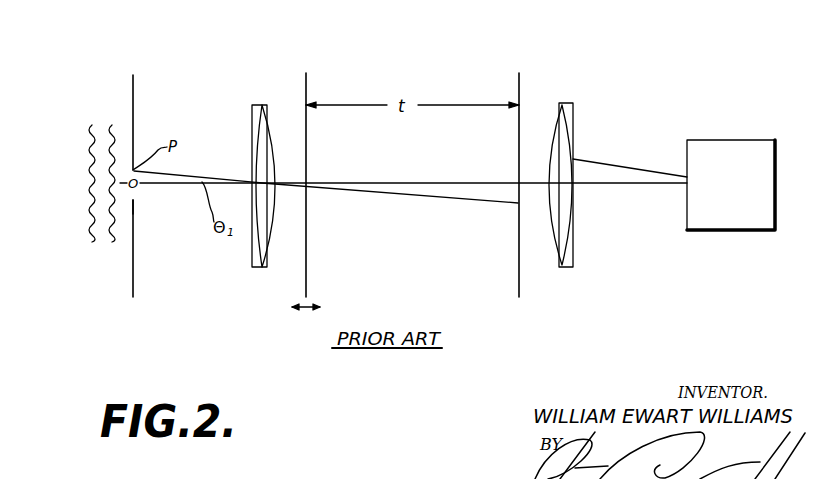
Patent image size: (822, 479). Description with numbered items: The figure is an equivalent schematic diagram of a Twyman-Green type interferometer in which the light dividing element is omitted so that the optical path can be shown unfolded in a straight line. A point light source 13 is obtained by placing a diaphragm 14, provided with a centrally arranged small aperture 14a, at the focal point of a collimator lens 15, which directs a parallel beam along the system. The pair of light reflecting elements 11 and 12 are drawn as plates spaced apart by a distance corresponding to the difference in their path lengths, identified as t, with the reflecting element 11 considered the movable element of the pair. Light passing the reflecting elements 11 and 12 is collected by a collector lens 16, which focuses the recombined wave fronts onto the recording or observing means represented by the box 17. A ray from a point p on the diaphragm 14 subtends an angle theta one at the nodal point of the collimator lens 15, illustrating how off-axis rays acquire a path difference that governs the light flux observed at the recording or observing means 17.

The reflecting element 11 is at (304, 95).
The reflecting element 12 is at (520, 88).
The light source 13 is at (100, 119).
The diaphragm 14 is at (133, 88).
The aperture 14a is at (135, 200).
The collimator lens 15 is at (263, 105).
The collector lens 16 is at (562, 104).
The recording or observing means 17 is at (727, 140).